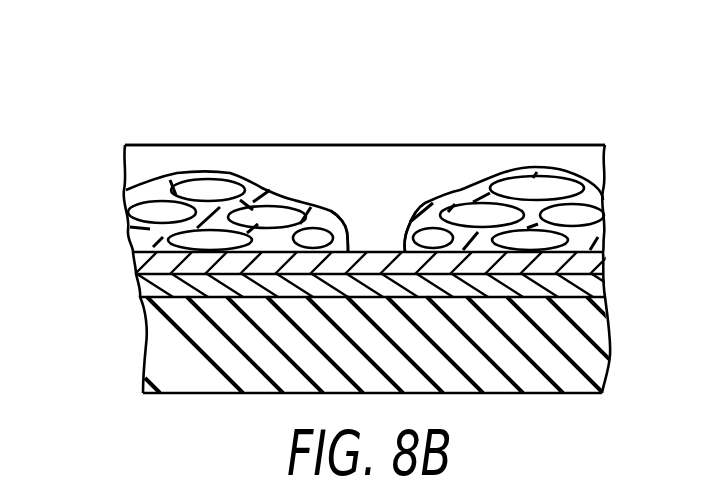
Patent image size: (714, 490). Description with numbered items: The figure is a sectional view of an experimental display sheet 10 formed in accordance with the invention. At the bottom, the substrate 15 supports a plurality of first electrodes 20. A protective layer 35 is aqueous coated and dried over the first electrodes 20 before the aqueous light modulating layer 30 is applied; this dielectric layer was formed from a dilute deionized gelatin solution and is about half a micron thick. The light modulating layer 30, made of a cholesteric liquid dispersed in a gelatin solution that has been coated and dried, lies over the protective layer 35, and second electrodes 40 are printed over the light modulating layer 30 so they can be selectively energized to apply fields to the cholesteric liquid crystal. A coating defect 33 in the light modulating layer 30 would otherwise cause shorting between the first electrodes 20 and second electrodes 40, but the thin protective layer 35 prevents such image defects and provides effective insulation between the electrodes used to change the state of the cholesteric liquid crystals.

The display sheet 10 is at (222, 100).
The second electrodes 40 is at (126, 159).
The light modulating layer 30 is at (107, 170).
The coating defect 33 is at (384, 131).
The protective layer 35 is at (132, 268).
The first electrodes 20 is at (138, 282).
The substrate 15 is at (158, 325).